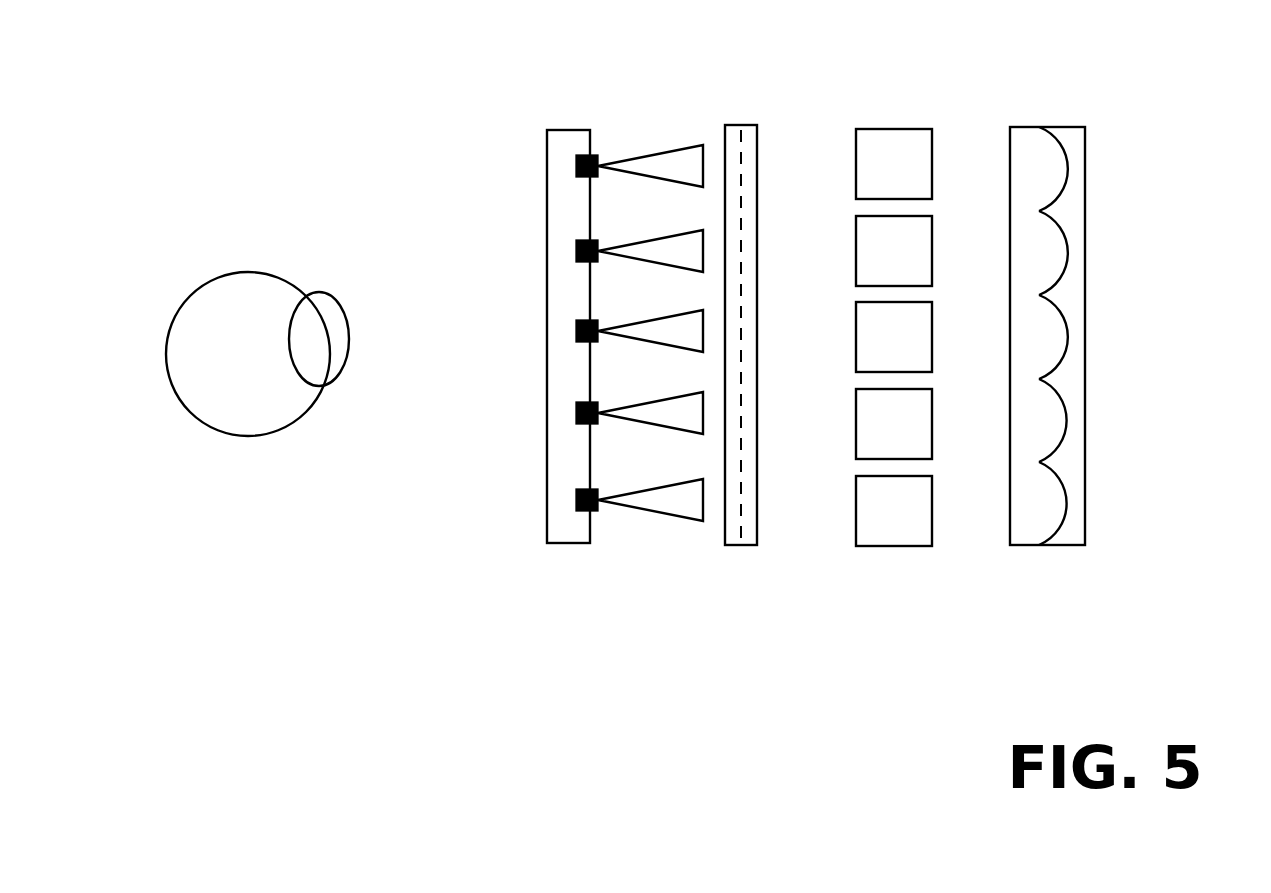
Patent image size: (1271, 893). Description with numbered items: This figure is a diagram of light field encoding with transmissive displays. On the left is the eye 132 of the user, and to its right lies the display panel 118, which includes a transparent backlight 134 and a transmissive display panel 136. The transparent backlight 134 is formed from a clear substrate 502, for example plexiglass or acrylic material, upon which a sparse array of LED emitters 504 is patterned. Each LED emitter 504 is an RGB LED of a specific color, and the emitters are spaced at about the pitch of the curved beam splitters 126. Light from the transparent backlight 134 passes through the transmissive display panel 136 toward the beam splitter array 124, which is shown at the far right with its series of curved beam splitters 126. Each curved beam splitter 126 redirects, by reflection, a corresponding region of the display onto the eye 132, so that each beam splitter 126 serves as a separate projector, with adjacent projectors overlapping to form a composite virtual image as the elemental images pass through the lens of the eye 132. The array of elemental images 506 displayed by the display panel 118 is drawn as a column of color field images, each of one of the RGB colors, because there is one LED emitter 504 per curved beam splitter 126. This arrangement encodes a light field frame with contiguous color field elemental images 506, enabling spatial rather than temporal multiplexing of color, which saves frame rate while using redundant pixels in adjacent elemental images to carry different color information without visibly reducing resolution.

The display panel 118 is at (662, 65).
The beam splitter array 124 is at (1060, 306).
The beam splitter 126 is at (1062, 197).
The eye 132 is at (250, 438).
The transparent backlight 134 is at (628, 314).
The transmissive display panel 136 is at (723, 547).
The clear substrate 502 is at (547, 155).
The LED emitter 504 is at (598, 511).
The elemental image 506 is at (893, 563).